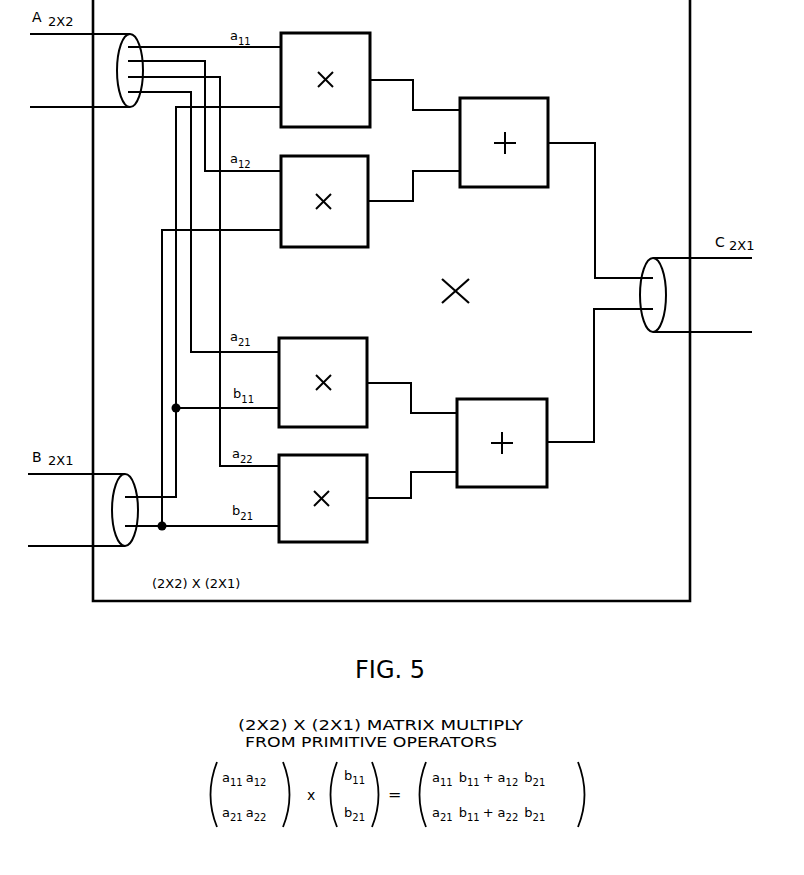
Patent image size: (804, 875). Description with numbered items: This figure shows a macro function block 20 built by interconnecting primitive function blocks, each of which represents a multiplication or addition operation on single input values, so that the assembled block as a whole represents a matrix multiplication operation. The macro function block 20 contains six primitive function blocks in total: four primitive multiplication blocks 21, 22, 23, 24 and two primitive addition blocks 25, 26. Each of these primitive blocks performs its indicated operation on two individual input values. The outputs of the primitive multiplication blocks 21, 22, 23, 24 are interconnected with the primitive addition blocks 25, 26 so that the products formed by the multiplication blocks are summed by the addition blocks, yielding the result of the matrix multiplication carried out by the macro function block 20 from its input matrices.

The macro function block 20 is at (690, 570).
The primitive multiplication block 21 is at (370, 58).
The primitive multiplication block 22 is at (368, 170).
The primitive multiplication block 23 is at (367, 361).
The primitive multiplication block 24 is at (367, 474).
The primitive addition block 25 is at (549, 123).
The primitive addition block 26 is at (547, 411).